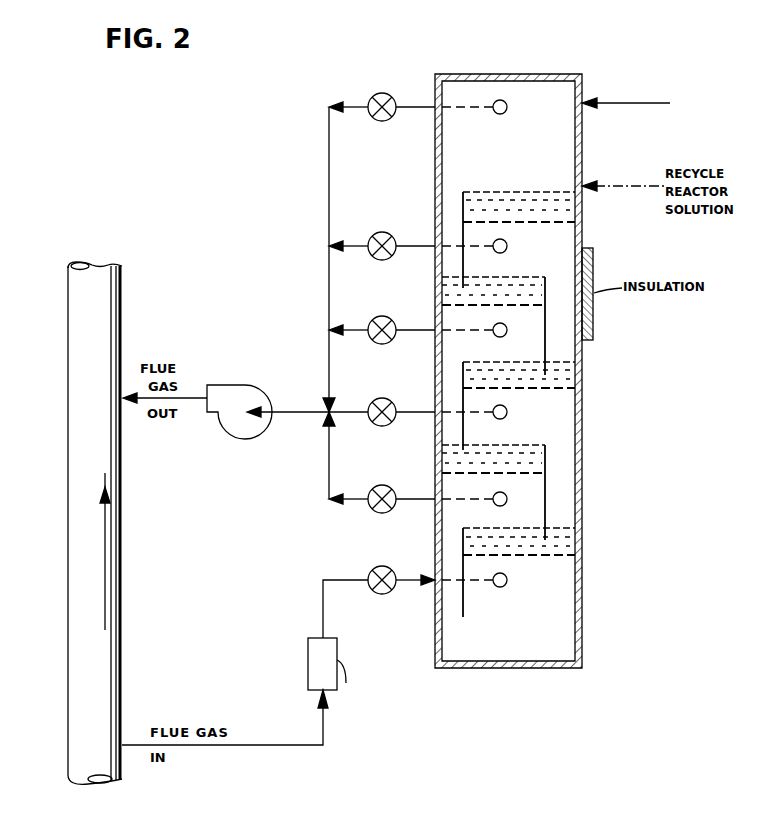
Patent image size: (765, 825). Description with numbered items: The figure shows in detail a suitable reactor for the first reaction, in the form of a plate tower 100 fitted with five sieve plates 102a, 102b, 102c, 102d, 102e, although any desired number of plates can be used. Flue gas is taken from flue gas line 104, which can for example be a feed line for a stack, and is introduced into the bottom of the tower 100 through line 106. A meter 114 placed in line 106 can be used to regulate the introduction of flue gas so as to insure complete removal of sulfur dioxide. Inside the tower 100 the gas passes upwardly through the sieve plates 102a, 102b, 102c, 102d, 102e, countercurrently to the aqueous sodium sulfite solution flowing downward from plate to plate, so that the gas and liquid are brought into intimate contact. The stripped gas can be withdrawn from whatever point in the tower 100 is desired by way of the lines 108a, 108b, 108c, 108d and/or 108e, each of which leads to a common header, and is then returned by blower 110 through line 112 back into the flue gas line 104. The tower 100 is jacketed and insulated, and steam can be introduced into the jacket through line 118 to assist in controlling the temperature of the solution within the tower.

The tower 100 is at (596, 497).
The sieve plate 102a is at (560, 556).
The sieve plate 102b is at (452, 483).
The sieve plate 102c is at (560, 389).
The sieve plate 102d is at (516, 304).
The sieve plate 102e is at (562, 223).
The flue gas line 104 is at (73, 708).
The line 106 is at (285, 746).
The line 108a is at (419, 500).
The line 108b is at (419, 412).
The line 108c is at (419, 330).
The line 108d is at (419, 246).
The line 108e is at (419, 108).
The blower 110 is at (247, 430).
The line 112 is at (197, 395).
The meter 114 is at (318, 656).
The line 118 is at (637, 103).